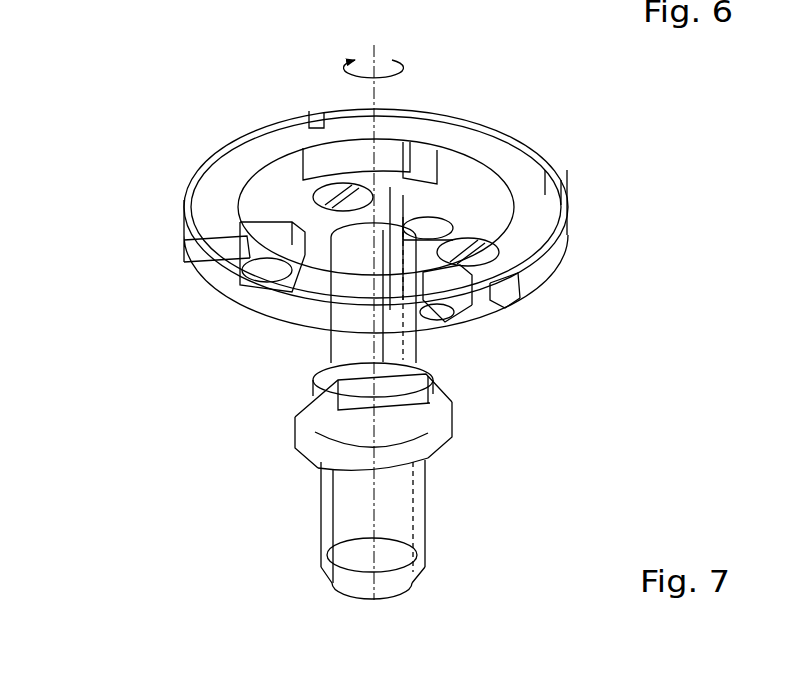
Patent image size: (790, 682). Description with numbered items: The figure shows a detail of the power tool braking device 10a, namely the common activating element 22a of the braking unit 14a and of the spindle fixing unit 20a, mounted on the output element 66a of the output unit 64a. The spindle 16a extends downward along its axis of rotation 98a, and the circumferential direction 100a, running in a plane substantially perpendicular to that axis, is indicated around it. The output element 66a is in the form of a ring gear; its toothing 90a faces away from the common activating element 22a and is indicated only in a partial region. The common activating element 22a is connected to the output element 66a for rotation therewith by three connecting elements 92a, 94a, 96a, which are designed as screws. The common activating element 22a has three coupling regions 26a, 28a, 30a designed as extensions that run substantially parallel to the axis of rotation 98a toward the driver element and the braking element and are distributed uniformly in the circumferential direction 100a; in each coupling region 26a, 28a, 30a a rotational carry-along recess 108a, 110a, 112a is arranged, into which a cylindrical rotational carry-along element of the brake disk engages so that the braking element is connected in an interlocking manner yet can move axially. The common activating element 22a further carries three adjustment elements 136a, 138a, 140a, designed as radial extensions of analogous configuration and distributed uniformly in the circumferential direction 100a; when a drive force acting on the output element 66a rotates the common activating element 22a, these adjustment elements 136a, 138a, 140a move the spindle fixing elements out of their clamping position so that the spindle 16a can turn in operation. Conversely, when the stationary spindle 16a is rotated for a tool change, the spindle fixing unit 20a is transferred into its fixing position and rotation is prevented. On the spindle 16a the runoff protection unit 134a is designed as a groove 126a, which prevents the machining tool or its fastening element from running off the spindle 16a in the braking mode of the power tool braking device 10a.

The power tool braking device 10a is at (128, 114).
The braking unit 14a is at (138, 226).
The spindle 16a is at (408, 520).
The spindle fixing unit 20a is at (564, 298).
The common activating element 22a is at (540, 217).
The coupling region 26a is at (245, 238).
The coupling region 28a is at (512, 210).
The coupling region 30a is at (470, 318).
The output unit 64a is at (221, 120).
The output element 66a is at (283, 153).
The toothing 90a is at (568, 187).
The connecting element 92a is at (318, 205).
The connecting element 94a is at (505, 258).
The connecting element 96a is at (318, 282).
The axis of rotation 98a is at (380, 45).
The circumferential direction 100a is at (350, 56).
The rotational carry-along recess 108a is at (270, 285).
The rotational carry-along recess 110a is at (440, 222).
The rotational carry-along recess 112a is at (437, 320).
The groove 126a is at (325, 530).
The runoff protection unit 134a is at (450, 508).
The adjustment element 136a is at (428, 160).
The adjustment element 138a is at (510, 306).
The adjustment element 140a is at (193, 267).